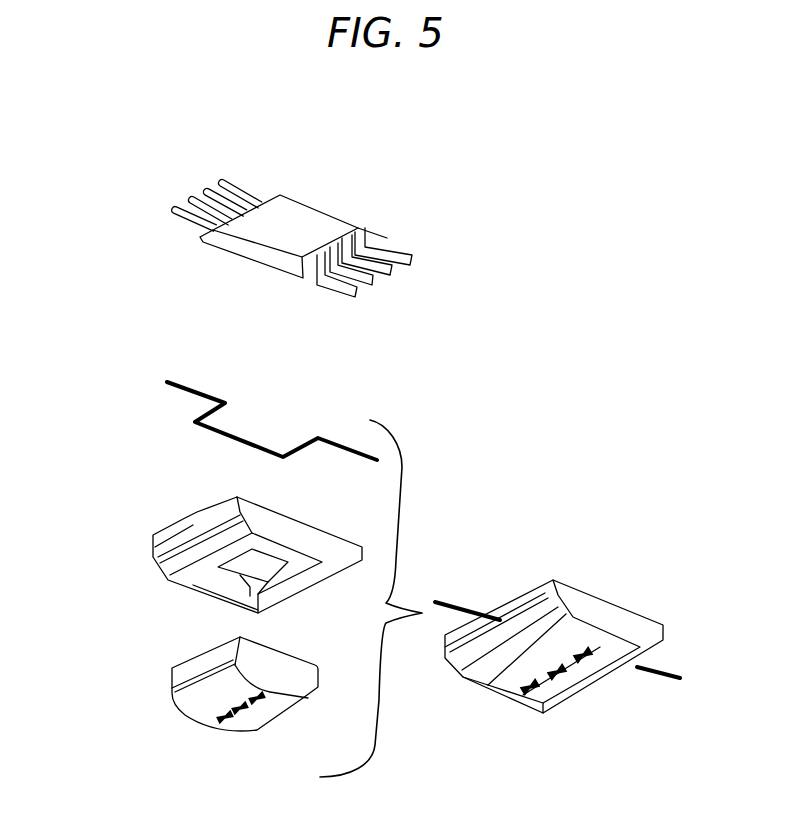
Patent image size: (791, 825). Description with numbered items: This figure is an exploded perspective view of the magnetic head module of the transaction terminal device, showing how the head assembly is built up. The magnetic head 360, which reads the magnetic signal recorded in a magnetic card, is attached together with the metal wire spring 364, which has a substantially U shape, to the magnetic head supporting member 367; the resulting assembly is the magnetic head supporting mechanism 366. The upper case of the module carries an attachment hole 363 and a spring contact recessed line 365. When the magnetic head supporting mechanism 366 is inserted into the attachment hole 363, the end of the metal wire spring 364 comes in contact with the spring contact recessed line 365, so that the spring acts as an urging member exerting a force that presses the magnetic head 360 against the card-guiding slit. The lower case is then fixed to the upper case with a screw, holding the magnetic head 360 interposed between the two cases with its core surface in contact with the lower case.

The magnetic head 360 is at (200, 665).
The attachment hole 363 is at (303, 225).
The metal wire spring 364 is at (202, 420).
The spring contact recessed line 365 is at (197, 193).
The magnetic head supporting mechanism 366 is at (630, 688).
The magnetic head supporting member 367 is at (167, 522).